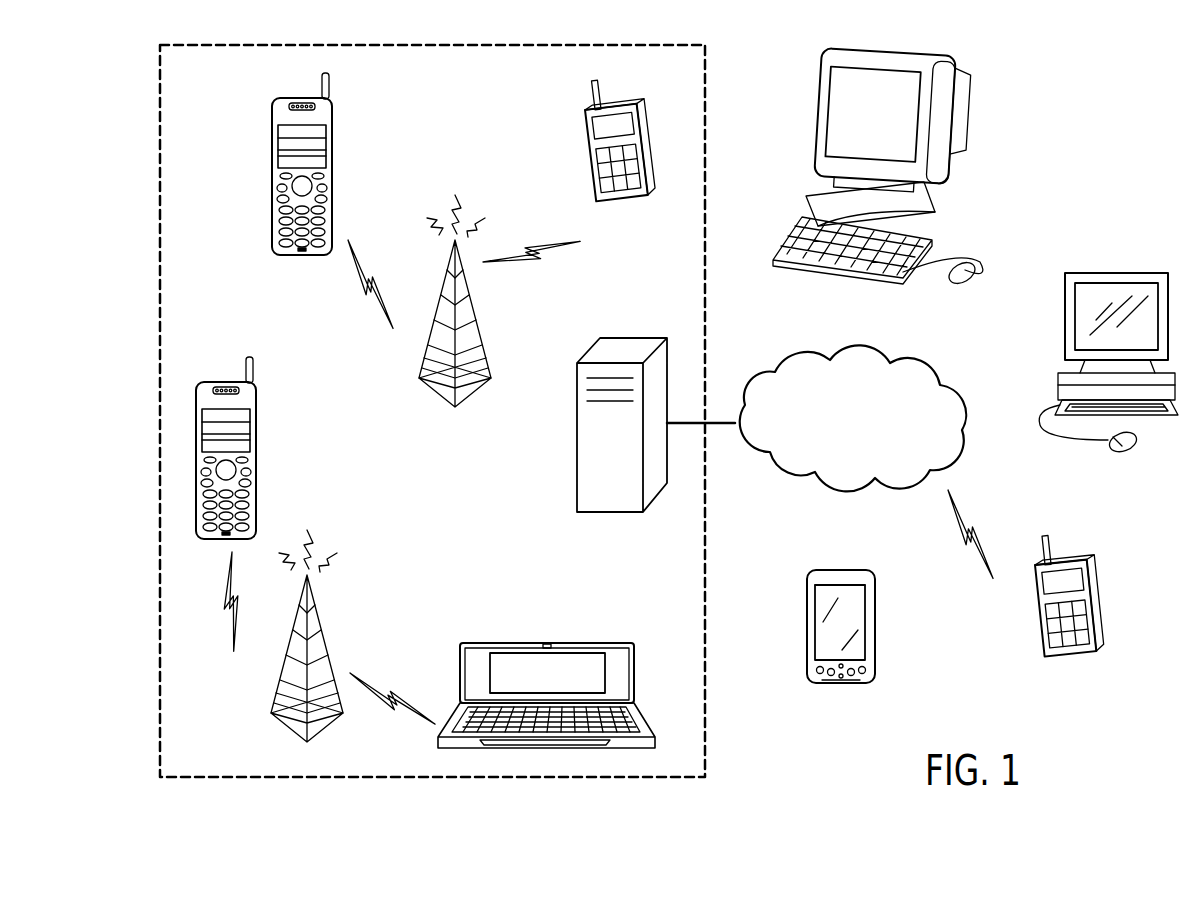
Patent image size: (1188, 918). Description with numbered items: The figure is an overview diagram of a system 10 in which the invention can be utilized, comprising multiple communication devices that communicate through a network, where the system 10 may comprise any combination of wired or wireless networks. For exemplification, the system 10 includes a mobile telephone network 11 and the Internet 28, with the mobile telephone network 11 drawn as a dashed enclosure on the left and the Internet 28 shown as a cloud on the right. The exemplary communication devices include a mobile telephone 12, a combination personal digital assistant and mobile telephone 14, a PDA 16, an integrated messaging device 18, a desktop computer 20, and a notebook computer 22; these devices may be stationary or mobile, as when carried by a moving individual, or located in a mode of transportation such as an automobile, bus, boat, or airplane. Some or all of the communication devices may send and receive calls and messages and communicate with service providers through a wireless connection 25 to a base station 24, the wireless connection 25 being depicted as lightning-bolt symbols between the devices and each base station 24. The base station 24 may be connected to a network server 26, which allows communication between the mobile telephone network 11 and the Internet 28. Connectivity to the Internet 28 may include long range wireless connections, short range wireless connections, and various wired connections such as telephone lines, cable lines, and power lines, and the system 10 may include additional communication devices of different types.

The system 10 is at (1161, 524).
The mobile telephone network 11 is at (203, 86).
The mobile telephone 12 is at (334, 176).
The combination personal digital assistant (PDA) and mobile telephone 14 is at (547, 642).
The PDA 16 is at (876, 625).
The integrated messaging device (IMD) 18 is at (580, 153).
The desktop computer 20 is at (968, 106).
The notebook computer 22 is at (1117, 273).
The base station 24 is at (474, 308).
The wireless connection 25 is at (249, 637).
The network server 26 is at (576, 437).
The Internet 28 is at (888, 352).